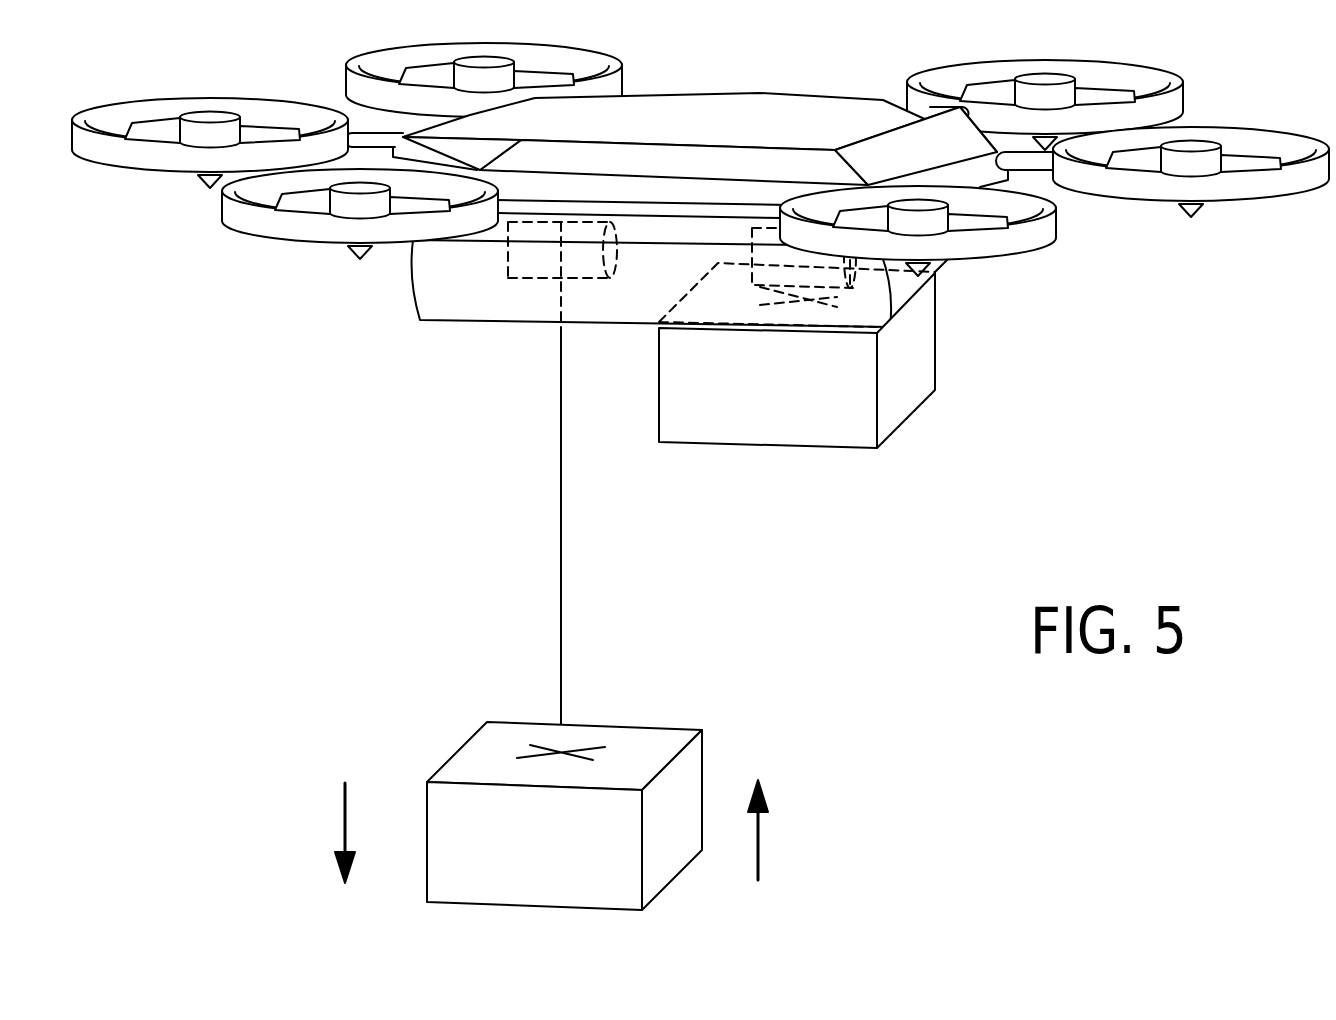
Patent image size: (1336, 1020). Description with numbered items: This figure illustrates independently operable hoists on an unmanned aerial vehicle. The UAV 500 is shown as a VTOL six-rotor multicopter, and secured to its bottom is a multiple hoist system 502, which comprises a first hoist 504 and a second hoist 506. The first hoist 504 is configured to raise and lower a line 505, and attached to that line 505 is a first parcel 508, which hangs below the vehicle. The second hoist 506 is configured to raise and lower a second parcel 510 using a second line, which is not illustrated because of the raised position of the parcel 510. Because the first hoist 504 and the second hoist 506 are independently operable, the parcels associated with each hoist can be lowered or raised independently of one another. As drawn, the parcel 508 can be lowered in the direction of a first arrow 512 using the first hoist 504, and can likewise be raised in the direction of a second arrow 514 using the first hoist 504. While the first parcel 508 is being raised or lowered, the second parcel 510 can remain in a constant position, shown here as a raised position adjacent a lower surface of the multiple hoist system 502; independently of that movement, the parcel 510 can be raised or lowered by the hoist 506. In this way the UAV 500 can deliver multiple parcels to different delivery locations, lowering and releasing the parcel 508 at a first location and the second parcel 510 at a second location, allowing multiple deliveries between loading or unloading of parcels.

The UAV 500 is at (720, 118).
The multiple hoist system 502 is at (428, 287).
The first hoist 504 is at (512, 260).
The line 505 is at (562, 527).
The second hoist 506 is at (837, 267).
The first parcel 508 is at (568, 855).
The second parcel 510 is at (795, 395).
The first arrow 512 is at (345, 798).
The second arrow 514 is at (760, 840).